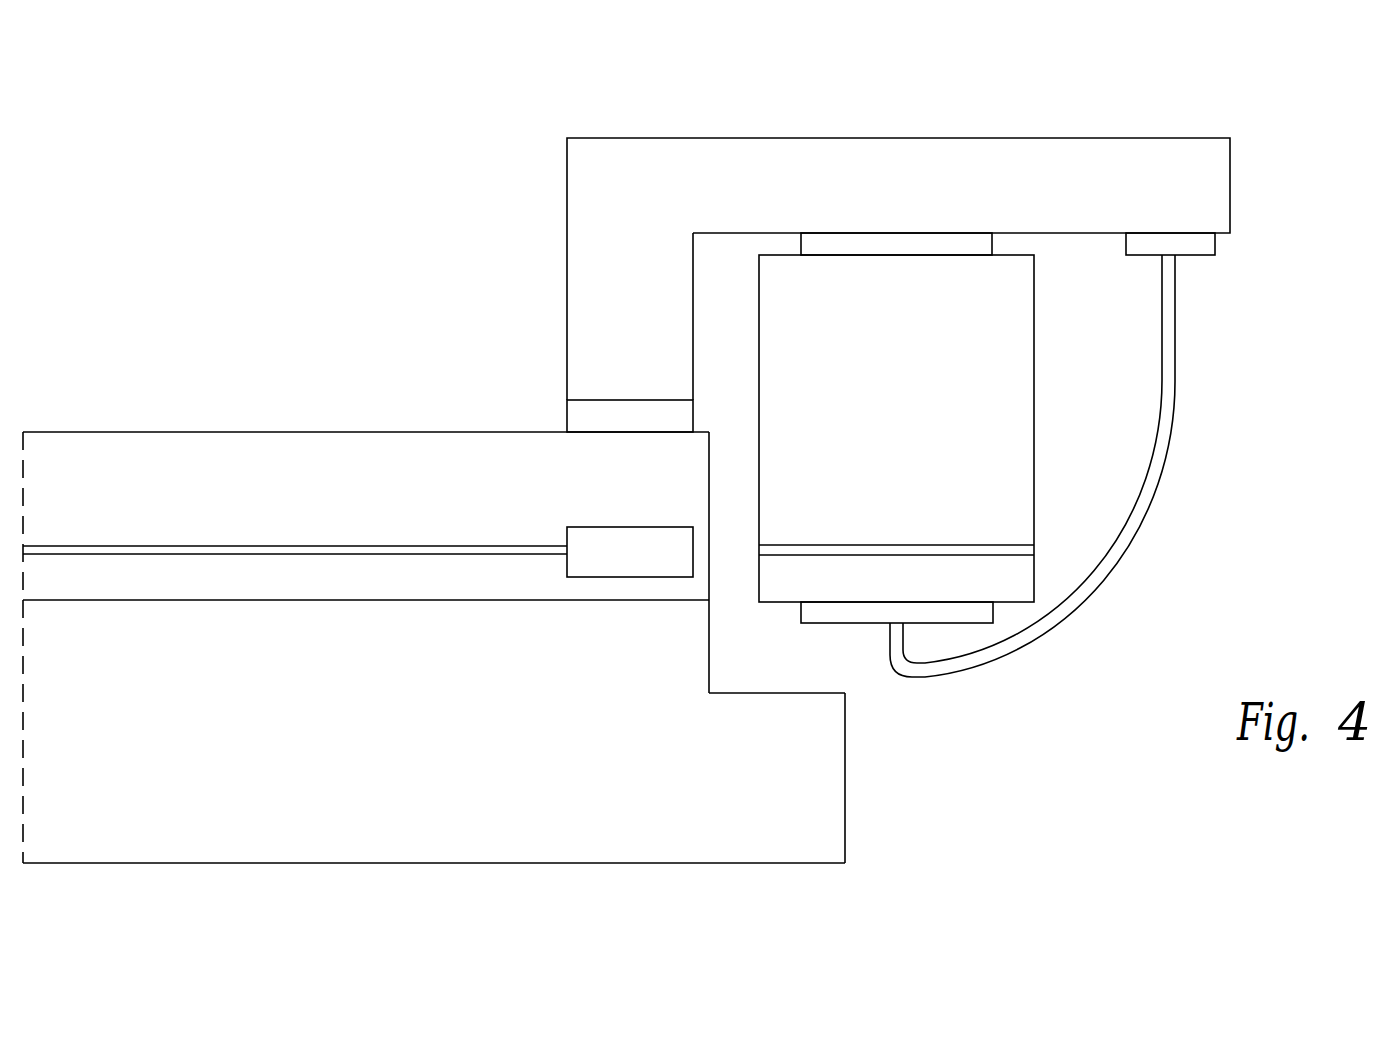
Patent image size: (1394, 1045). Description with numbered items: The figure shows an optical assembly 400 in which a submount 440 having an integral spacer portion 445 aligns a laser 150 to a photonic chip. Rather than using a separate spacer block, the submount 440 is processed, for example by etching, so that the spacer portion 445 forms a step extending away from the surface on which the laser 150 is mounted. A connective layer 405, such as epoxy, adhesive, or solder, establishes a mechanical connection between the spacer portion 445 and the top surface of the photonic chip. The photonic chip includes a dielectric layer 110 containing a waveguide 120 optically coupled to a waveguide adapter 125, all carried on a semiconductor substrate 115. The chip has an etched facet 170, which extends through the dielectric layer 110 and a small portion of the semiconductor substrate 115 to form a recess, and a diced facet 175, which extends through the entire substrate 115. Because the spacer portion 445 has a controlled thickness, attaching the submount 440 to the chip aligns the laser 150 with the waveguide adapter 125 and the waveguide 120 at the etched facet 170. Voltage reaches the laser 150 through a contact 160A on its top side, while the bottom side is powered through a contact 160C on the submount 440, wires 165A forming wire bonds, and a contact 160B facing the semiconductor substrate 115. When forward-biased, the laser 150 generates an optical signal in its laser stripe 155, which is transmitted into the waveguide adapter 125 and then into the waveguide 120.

The optical assembly 400 is at (352, 56).
The submount 440 is at (580, 215).
The spacer portion 445 is at (575, 338).
The connective layer 405 is at (880, 908).
The contact 160A is at (820, 243).
The contact 160B is at (872, 615).
The contact 160C is at (1202, 243).
The laser 150 is at (928, 280).
The laser stripe 155 is at (897, 545).
The wires 165A is at (1167, 328).
The etched facet 170 is at (710, 452).
The diced facet 175 is at (845, 770).
The dielectric layer 110 is at (248, 588).
The semiconductor substrate 115 is at (510, 868).
The waveguide 120 is at (295, 545).
The waveguide adapter 125 is at (612, 538).